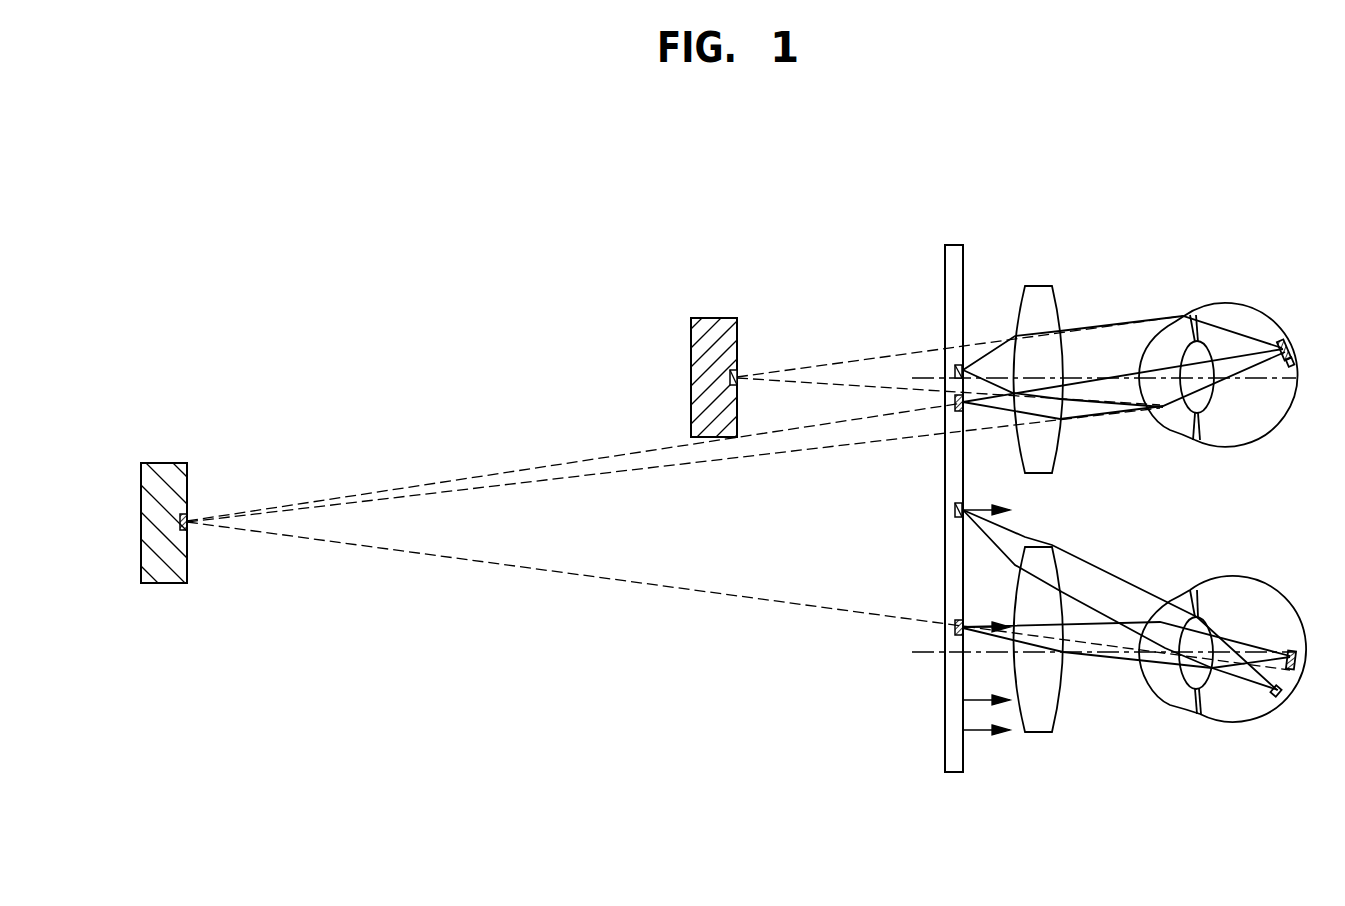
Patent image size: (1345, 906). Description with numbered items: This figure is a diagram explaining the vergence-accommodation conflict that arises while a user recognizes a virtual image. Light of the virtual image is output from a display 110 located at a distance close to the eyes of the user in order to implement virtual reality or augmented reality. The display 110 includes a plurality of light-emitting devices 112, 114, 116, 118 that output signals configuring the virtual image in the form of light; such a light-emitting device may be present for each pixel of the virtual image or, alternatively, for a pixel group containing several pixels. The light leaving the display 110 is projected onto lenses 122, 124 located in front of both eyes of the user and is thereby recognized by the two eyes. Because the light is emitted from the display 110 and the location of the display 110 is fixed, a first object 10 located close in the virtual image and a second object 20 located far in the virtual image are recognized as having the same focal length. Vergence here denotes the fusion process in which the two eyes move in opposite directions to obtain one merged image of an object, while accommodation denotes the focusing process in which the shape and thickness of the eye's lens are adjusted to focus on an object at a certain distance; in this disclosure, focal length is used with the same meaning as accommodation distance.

The first object 10 is at (715, 318).
The second object 20 is at (164, 463).
The display 110 is at (953, 245).
The light-emitting device 112 is at (955, 368).
The light-emitting device 114 is at (955, 507).
The light-emitting device 116 is at (955, 401).
The light-emitting device 118 is at (955, 627).
The lens 122 is at (1040, 286).
The lens 124 is at (1040, 735).